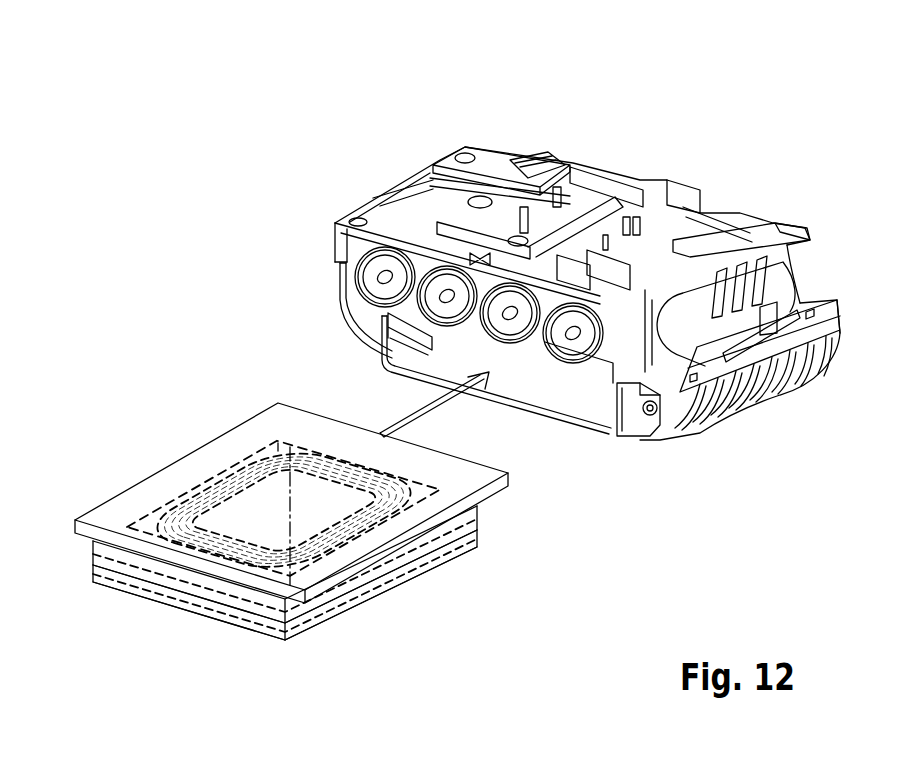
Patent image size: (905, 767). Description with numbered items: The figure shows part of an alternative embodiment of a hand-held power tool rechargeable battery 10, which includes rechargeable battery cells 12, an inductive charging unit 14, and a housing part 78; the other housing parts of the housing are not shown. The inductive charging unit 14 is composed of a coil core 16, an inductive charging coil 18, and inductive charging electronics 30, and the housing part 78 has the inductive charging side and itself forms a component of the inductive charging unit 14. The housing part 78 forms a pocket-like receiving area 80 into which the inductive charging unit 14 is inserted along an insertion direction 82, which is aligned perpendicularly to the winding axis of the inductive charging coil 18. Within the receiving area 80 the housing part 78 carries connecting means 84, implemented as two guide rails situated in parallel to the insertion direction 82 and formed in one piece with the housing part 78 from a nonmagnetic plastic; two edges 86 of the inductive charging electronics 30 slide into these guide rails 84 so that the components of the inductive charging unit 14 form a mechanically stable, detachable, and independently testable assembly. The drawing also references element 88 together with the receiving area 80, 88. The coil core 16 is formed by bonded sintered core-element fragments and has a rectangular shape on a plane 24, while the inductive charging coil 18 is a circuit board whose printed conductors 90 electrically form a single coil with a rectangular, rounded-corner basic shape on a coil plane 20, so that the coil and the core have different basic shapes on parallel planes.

The hand-held power tool rechargeable battery 10 is at (682, 113).
The rechargeable battery cells 12 is at (343, 222).
The inductive charging unit 14 is at (228, 413).
The coil core 16 is at (93, 555).
The inductive charging coil 18 is at (93, 577).
The coil plane 20 is at (150, 605).
The plane 24 is at (213, 598).
The inductive charging electronics 30 is at (107, 512).
The housing part 78 is at (345, 252).
The pocket-like receiving area 80 is at (496, 420).
The insertion direction 82 is at (417, 411).
The connecting means 84 is at (375, 329).
The edges 86 is at (170, 460).
The wire 88 is at (565, 410).
The printed conductors 90 is at (330, 553).